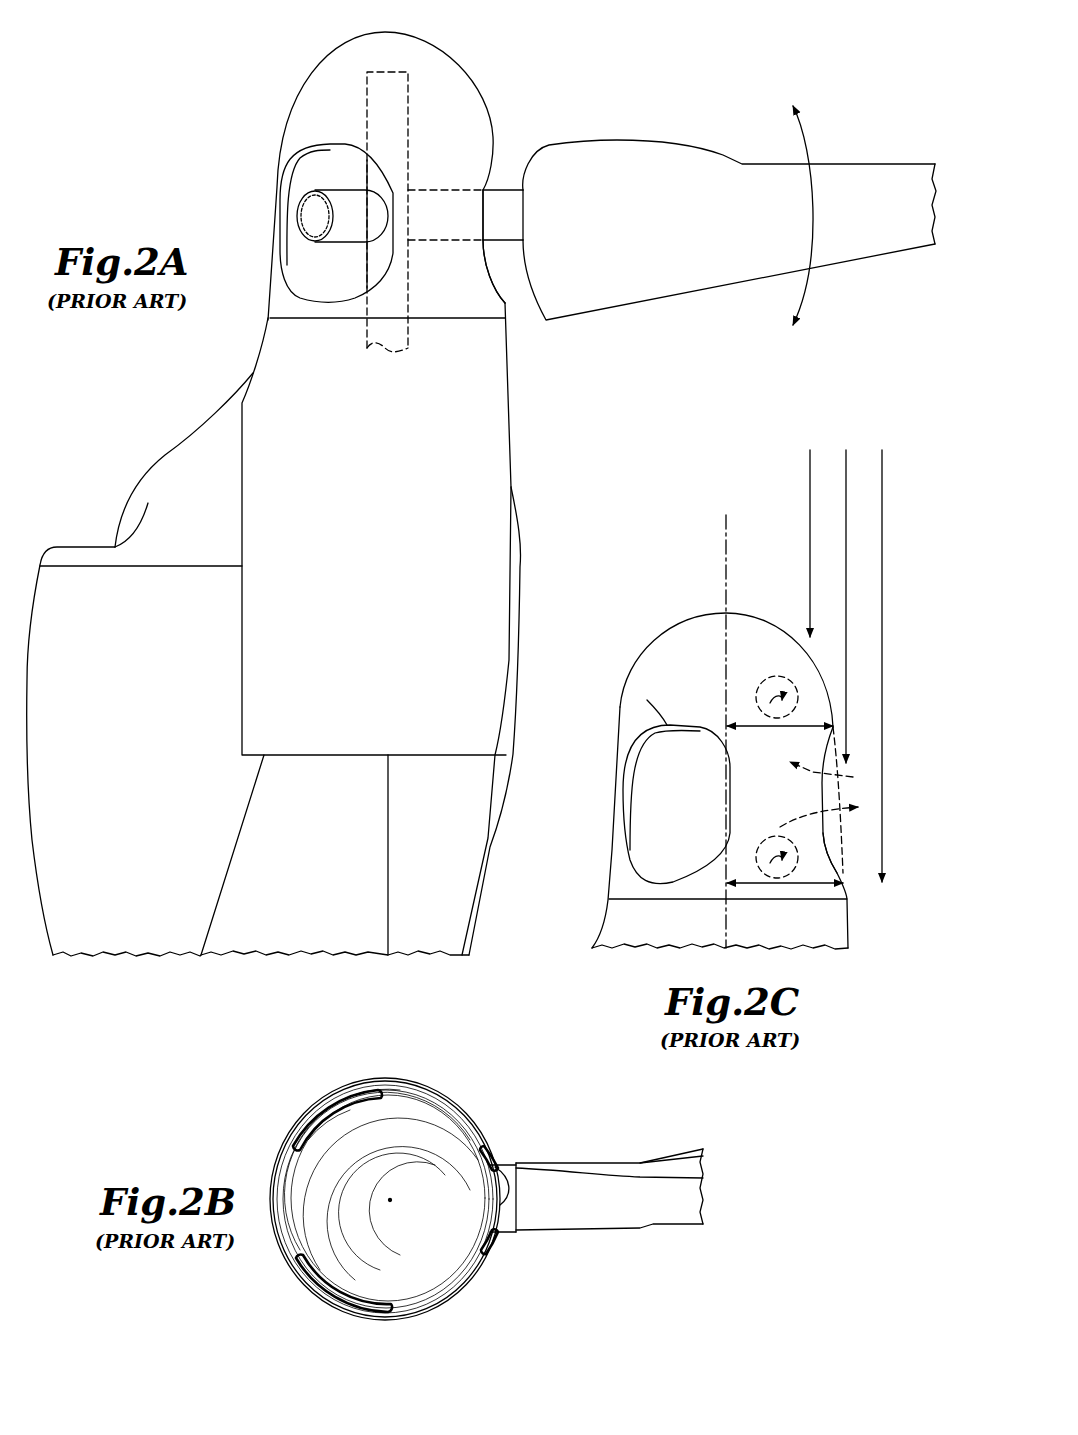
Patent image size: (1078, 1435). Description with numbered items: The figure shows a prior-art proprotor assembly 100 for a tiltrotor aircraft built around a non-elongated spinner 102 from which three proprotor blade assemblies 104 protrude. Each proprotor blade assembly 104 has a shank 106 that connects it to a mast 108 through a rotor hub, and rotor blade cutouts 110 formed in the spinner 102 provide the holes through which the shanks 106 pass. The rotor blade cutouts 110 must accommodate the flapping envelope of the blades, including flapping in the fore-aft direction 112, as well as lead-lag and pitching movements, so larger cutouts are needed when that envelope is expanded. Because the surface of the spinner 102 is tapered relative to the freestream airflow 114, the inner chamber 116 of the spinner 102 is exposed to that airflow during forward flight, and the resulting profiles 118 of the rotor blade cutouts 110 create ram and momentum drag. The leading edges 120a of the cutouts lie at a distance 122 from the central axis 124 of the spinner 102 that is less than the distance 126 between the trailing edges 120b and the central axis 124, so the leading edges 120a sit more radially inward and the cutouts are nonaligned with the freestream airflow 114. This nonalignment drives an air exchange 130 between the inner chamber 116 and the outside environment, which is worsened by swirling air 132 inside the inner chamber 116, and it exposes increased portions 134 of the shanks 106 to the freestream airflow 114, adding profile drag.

In FIG. 2A, the proprotor assembly 100 is at (262, 100).
In FIG. 2B, the proprotor assembly 100 is at (262, 1135).
In FIG. 2A, the non-elongated spinner 102 is at (350, 37).
In FIG. 2C, the non-elongated spinner 102 is at (680, 627).
In FIG. 2B, the non-elongated spinner 102 is at (405, 1080).
In FIG. 2A, the proprotor blade assemblies 104 is at (613, 140).
In FIG. 2B, the proprotor blade assemblies 104 is at (603, 1230).
In FIG. 2A, the shanks 106 is at (517, 190).
In FIG. 2B, the shanks 106 is at (510, 1225).
In FIG. 2A, the mast 108 is at (410, 87).
In FIG. 2A, the rotor blade cutouts 110 is at (488, 273).
In FIG. 2C, the rotor blade cutouts 110 is at (657, 710).
In FIG. 2B, the rotor blade cutouts 110 is at (328, 1118).
In FIG. 2A, the fore-aft direction 112 is at (811, 147).
In FIG. 2C, the freestream airflow 114 is at (808, 465).
In FIG. 2A, the inner chamber 116 is at (302, 172).
In FIG. 2C, the inner chamber 116 is at (638, 788).
In FIG. 2B, the inner chamber 116 is at (335, 1102).
In FIG. 2B, the profiles 118 is at (298, 1132).
In FIG. 2A, the leading edges 120a is at (493, 143).
In FIG. 2C, the leading edges 120a is at (847, 728).
In FIG. 2A, the trailing edges 120b is at (507, 303).
In FIG. 2C, the trailing edges 120b is at (843, 882).
In FIG. 2C, the distance 122 is at (830, 707).
In FIG. 2C, the central axis 124 is at (725, 532).
In FIG. 2B, the central axis 124 is at (390, 1200).
In FIG. 2C, the distance 126 is at (815, 883).
In FIG. 2C, the air exchange 130 is at (815, 813).
In FIG. 2C, the swirling air 132 is at (788, 678).
In FIG. 2A, the increased portions 134 is at (490, 187).
In FIG. 2B, the increased portions 134 is at (500, 1167).